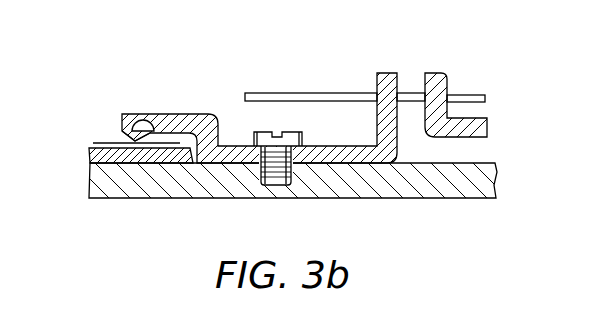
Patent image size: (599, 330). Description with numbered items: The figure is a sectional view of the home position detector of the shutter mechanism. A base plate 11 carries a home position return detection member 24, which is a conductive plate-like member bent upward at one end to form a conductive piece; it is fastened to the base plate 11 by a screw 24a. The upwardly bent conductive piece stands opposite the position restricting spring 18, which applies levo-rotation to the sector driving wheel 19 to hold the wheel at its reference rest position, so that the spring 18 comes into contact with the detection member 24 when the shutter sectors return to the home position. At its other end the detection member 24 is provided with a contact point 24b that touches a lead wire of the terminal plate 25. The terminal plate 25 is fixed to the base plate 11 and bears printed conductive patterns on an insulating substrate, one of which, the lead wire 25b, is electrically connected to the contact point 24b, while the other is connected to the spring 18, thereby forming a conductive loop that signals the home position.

The base plate 11 is at (404, 193).
The position restricting spring 18 is at (305, 92).
The sector driving wheel 19 is at (447, 80).
The home position return detection member 24 is at (255, 97).
The screw 24a is at (291, 131).
The contact point 24b is at (125, 138).
The terminal plate 25 is at (100, 177).
The conductive pattern 25b is at (112, 143).